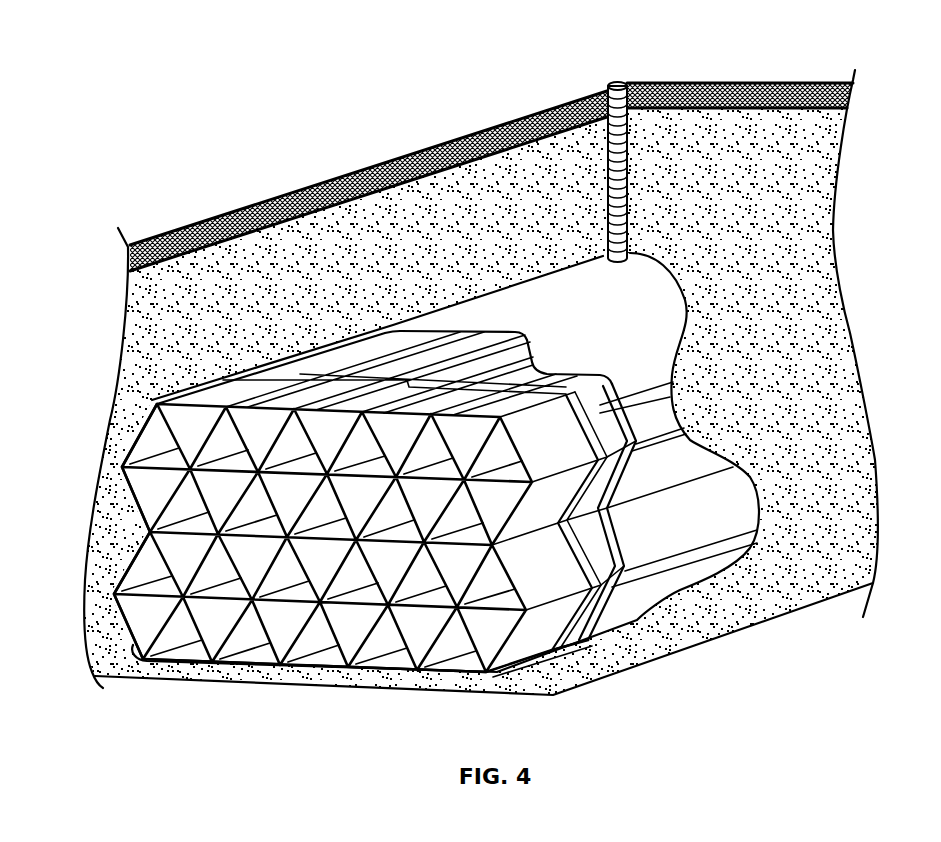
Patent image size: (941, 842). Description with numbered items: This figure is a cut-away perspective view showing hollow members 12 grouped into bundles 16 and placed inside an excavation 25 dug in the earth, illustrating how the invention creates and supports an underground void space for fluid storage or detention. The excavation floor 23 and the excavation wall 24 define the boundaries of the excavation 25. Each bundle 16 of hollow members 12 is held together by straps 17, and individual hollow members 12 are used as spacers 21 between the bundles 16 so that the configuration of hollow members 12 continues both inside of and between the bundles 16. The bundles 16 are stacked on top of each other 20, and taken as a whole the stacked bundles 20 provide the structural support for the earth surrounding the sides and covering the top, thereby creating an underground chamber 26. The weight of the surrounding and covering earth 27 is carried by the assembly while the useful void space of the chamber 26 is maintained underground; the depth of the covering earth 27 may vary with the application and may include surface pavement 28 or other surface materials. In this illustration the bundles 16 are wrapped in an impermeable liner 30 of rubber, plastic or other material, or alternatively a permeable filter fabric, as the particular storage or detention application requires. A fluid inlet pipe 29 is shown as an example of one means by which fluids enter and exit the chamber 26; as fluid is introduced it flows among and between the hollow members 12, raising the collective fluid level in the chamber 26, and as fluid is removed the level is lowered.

The hollow members 12 is at (533, 639).
The bundles 16 is at (613, 428).
The straps 17 is at (582, 417).
The stacked bundles 20 is at (133, 577).
The spacers 21 is at (330, 440).
The excavation floor 23 is at (472, 683).
The excavation wall 24 is at (157, 290).
The excavation 25 is at (222, 340).
The underground chamber 26 is at (458, 347).
The covering earth 27 is at (677, 180).
The surface pavement 28 is at (357, 170).
The fluid inlet pipe 29 is at (615, 80).
The impermeable liner 30 is at (610, 315).